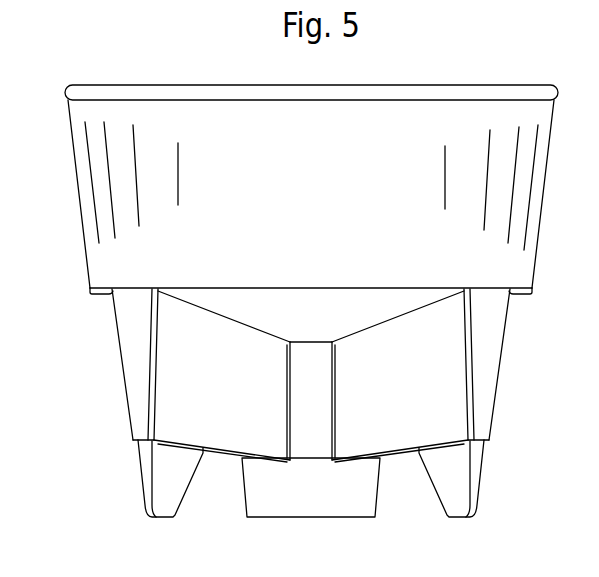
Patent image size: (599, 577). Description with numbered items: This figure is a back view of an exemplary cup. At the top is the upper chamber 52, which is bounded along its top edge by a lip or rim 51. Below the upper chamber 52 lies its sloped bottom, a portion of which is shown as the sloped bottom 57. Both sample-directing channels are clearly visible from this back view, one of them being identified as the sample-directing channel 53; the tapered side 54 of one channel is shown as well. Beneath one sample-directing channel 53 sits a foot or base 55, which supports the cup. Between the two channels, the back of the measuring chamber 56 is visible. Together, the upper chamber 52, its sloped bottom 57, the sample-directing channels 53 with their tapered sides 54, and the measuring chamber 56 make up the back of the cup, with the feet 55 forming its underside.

The lip or rim 51 is at (71, 89).
The upper chamber 52 is at (304, 185).
The sample-directing channel 53 is at (130, 353).
The tapered side of channel 54 is at (240, 396).
The foot or base 55 is at (163, 503).
The back of measuring chamber 56 is at (313, 472).
The sloped bottom portion of upper chamber 57 is at (325, 327).